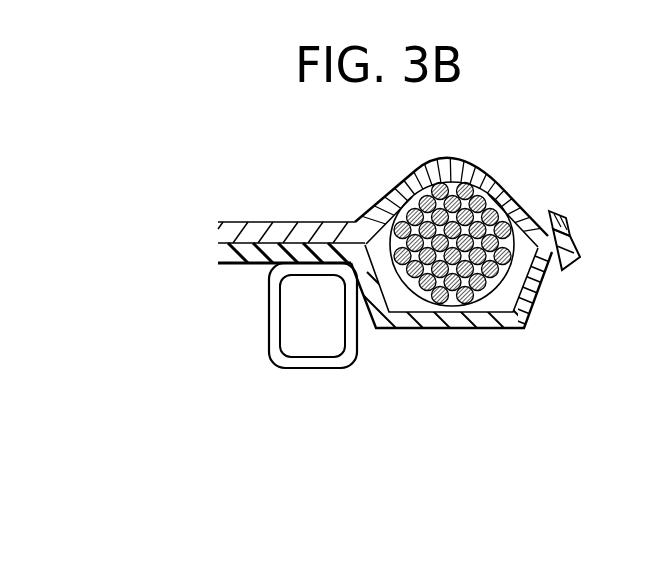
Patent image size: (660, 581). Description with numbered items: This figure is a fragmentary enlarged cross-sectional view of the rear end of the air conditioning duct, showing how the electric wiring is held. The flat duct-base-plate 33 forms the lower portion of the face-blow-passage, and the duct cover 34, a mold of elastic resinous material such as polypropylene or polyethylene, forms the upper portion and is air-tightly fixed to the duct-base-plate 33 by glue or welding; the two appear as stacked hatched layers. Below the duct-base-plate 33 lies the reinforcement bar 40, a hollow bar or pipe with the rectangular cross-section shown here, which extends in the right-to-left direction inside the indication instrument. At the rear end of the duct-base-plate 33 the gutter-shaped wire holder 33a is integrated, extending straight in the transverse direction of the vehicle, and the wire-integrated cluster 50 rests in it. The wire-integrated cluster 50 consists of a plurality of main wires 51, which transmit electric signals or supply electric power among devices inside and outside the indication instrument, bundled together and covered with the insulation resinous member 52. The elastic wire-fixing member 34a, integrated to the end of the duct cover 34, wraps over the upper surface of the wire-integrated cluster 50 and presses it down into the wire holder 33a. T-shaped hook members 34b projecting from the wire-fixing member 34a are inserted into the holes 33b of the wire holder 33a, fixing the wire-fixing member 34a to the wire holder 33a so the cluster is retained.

The duct-base-plate 33 is at (241, 266).
The wire holder 33a is at (408, 322).
The holes 33b is at (566, 232).
The duct cover 34 is at (262, 223).
The wire-fixing member 34a is at (500, 184).
The T-shaped hook members 34b is at (562, 272).
The reinforcement bar 40 is at (268, 326).
The wire-integrated cluster 50 is at (371, 255).
The main wires 51 is at (482, 295).
The insulation resinous member 52 is at (527, 315).